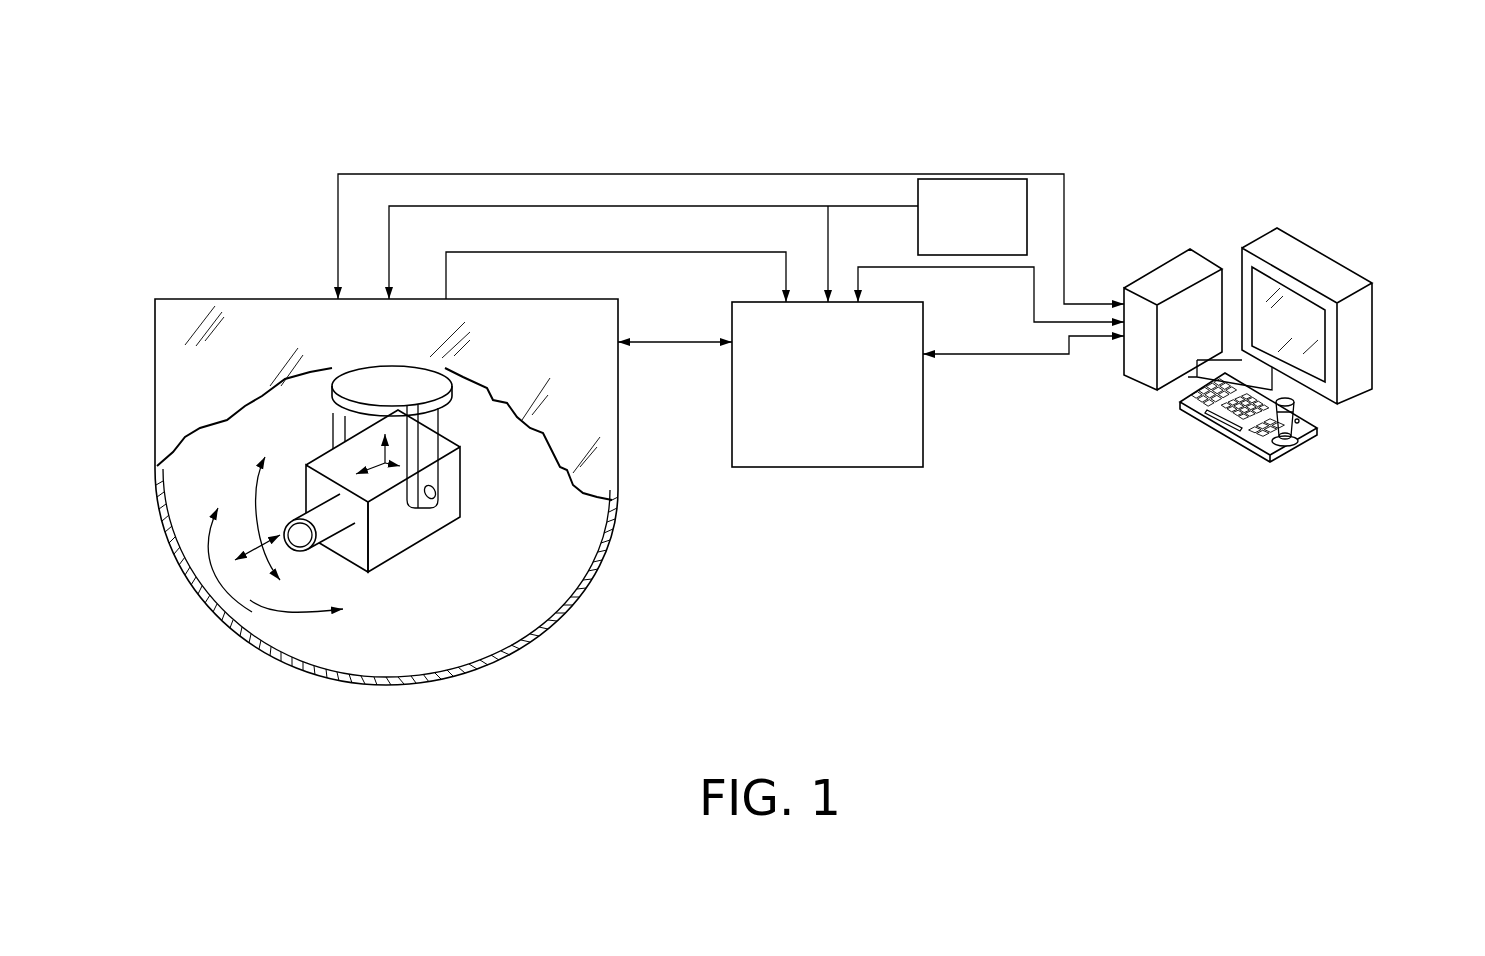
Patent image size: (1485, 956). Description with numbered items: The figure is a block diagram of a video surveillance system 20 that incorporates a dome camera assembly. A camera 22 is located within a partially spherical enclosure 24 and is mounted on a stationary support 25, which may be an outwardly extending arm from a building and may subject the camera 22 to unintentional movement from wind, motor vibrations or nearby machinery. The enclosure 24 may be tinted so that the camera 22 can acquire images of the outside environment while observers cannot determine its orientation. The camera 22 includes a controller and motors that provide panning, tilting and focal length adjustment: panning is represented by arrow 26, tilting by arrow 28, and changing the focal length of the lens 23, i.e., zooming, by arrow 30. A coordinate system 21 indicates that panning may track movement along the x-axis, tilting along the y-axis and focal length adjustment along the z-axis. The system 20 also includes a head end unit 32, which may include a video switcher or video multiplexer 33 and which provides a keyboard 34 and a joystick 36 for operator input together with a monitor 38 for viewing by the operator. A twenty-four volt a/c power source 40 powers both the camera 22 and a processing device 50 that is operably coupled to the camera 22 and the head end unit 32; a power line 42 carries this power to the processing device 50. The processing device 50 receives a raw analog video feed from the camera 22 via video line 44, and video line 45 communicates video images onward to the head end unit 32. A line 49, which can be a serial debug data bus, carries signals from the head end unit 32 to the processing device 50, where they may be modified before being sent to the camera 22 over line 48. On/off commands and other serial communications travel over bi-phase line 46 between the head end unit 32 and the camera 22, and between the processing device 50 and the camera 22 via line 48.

The video surveillance system 20 is at (616, 139).
The coordinate system 21 is at (372, 575).
The camera 22 is at (422, 532).
The lens 23 is at (302, 535).
The partially spherical enclosure 24 is at (612, 493).
The support 25 is at (360, 376).
The arrow 26 is at (253, 600).
The arrow 28 is at (283, 553).
The arrow 30 is at (283, 553).
The head end unit 32 is at (1165, 503).
The video multiplexer 33 is at (1150, 268).
The keyboard 34 is at (1193, 420).
The joystick 36 is at (1293, 434).
The monitor 38 is at (1330, 337).
The 24 volt a/c power source 40 is at (968, 179).
The power line 42 is at (810, 206).
The video line 44 is at (646, 252).
The video line 45 is at (952, 268).
The bi-phase line 46 is at (686, 174).
The line 48 is at (684, 344).
The line 49 is at (1003, 355).
The processing device 50 is at (923, 455).